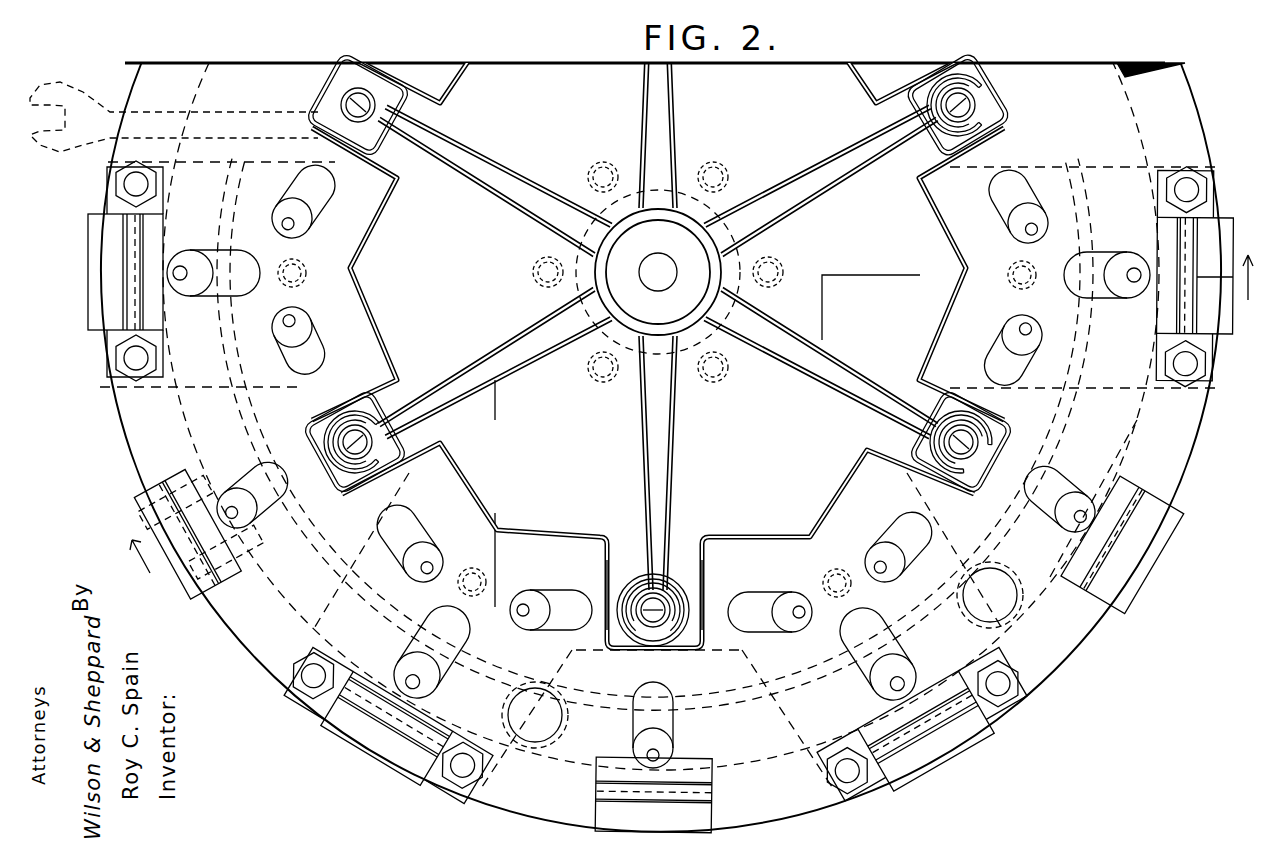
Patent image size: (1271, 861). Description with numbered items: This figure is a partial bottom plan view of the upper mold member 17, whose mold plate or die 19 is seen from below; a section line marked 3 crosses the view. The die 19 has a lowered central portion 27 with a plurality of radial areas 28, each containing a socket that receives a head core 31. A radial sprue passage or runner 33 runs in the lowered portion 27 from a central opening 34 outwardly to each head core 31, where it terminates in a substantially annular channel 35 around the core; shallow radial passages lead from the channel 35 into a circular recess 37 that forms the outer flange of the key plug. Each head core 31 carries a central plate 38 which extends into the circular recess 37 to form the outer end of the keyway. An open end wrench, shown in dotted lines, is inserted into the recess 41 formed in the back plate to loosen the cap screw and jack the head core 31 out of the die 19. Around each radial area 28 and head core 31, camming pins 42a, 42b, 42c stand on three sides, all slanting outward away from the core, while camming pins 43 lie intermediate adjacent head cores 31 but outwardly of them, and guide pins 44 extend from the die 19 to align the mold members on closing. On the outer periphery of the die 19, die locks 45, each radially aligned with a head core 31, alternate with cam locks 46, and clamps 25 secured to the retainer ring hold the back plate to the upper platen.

The upper mold member 17 is at (1137, 645).
The mold plate or die 19 is at (447, 316).
The lowered central portion 27 is at (910, 237).
The clamps 25 is at (1210, 340).
The radial areas 28 is at (378, 150).
The head cores 31 is at (950, 400).
The radial sprue passage or runner 33 is at (683, 155).
The central opening 34 is at (700, 278).
The annular channel 35 is at (393, 110).
The circular recess 37 is at (985, 455).
The central plate 38 is at (965, 402).
The recess 41 is at (532, 798).
The camming pin 42a is at (248, 490).
The camming pin 42b is at (312, 323).
The camming pin 42c is at (315, 208).
The camming pins 43 is at (238, 258).
The guide pins 44 is at (553, 705).
The die locks 45 is at (1145, 556).
The cam locks 46 is at (1215, 295).
The section line 3 is at (681, 397).